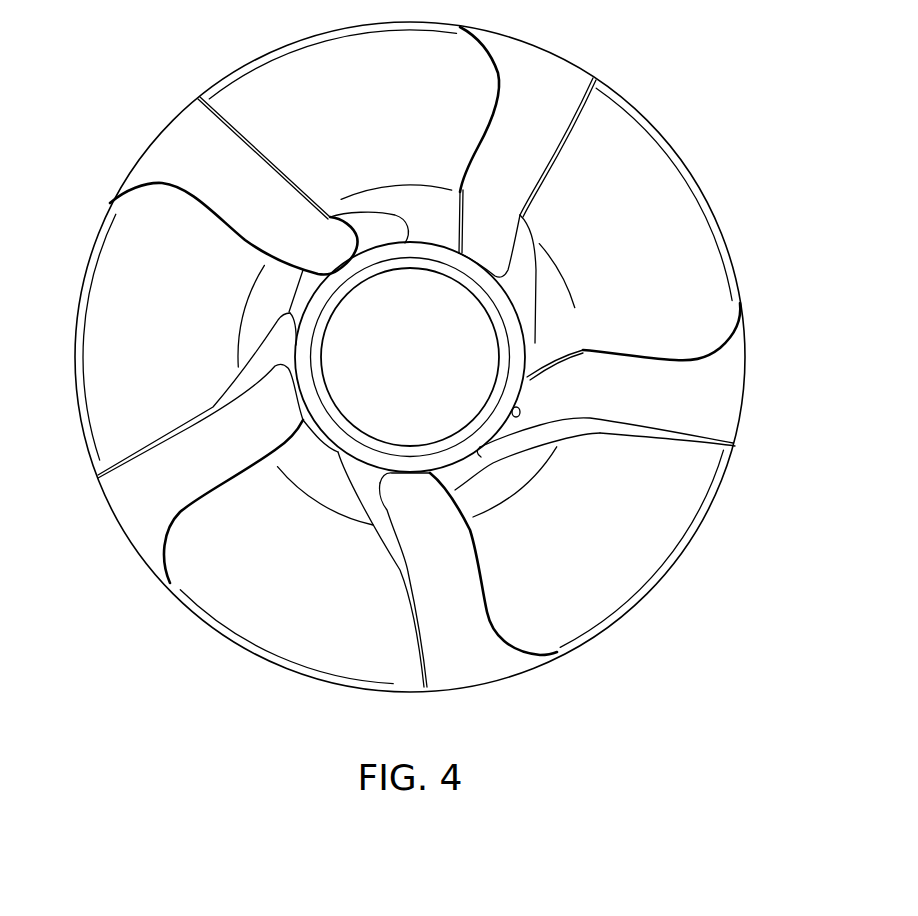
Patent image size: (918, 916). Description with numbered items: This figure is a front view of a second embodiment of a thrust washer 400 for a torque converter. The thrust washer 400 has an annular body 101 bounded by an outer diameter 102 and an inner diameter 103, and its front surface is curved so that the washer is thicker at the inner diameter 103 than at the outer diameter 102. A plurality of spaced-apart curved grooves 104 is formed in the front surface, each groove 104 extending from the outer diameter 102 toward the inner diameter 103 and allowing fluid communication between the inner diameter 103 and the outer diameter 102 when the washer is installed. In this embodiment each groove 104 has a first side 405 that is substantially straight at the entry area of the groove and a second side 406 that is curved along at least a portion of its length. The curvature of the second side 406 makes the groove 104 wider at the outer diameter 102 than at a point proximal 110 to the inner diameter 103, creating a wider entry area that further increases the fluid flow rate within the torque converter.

The thrust washer 400 is at (155, 71).
The annular body 101 is at (100, 331).
The outer diameter 102 is at (746, 380).
The inner diameter 103 is at (497, 347).
The curved groove 104 is at (547, 77).
The point proximal to the inner diameter 110 is at (519, 416).
The first side 405 is at (158, 447).
The second side 406 is at (198, 193).